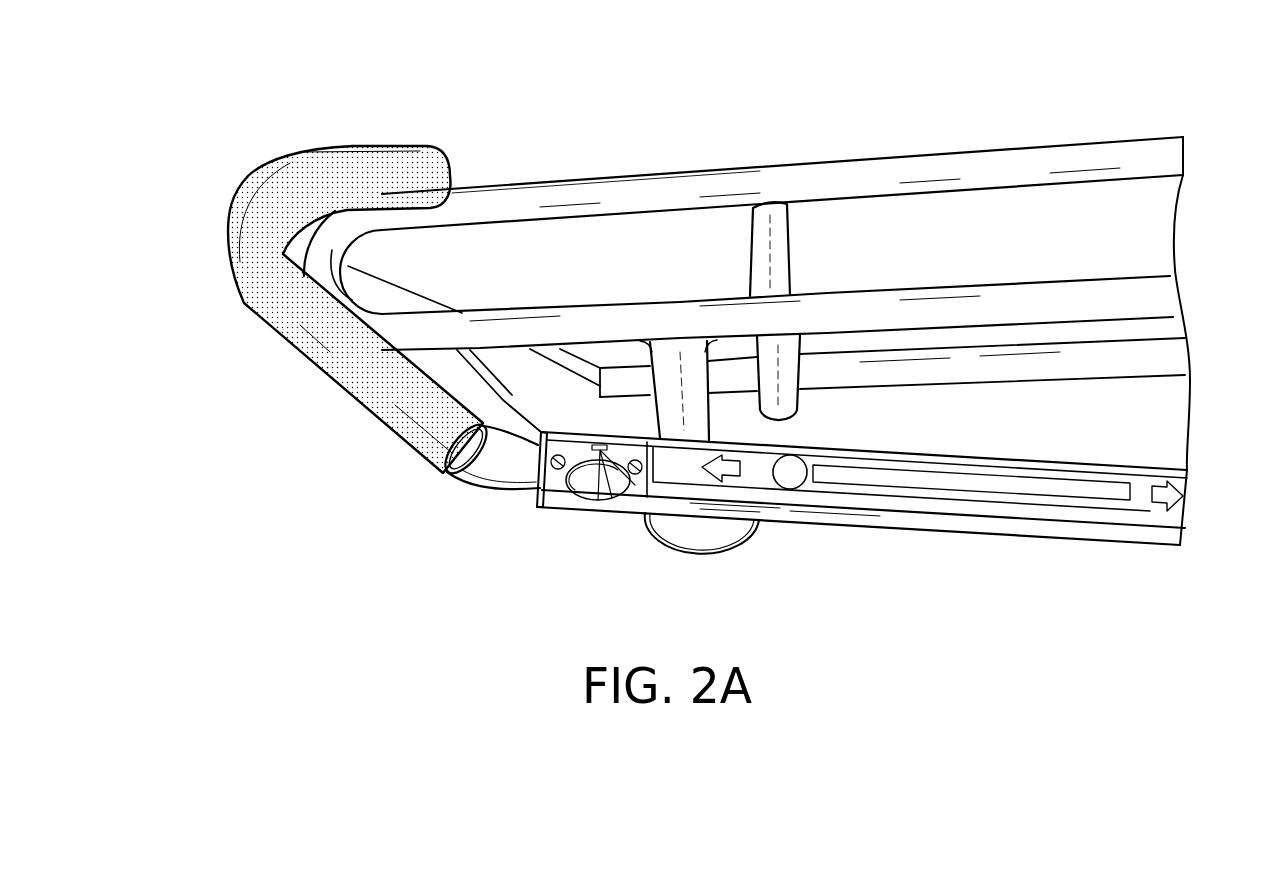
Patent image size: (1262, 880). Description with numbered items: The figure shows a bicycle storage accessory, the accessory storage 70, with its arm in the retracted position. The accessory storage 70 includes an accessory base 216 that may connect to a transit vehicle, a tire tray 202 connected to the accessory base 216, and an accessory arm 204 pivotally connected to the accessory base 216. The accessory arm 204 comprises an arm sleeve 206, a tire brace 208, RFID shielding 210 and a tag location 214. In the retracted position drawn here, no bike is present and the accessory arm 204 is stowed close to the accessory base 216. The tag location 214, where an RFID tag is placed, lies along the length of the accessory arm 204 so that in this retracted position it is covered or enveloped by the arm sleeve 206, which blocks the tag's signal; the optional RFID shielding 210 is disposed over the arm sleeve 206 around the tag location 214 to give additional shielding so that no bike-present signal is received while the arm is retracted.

The accessory storage 70 is at (806, 261).
The tire tray 202 is at (544, 204).
The accessory arm 204 is at (480, 486).
The arm sleeve 206 is at (866, 524).
The tire brace 208 is at (360, 381).
The RFID shielding 210 is at (574, 522).
The tag location 214 is at (592, 469).
The accessory base 216 is at (750, 242).